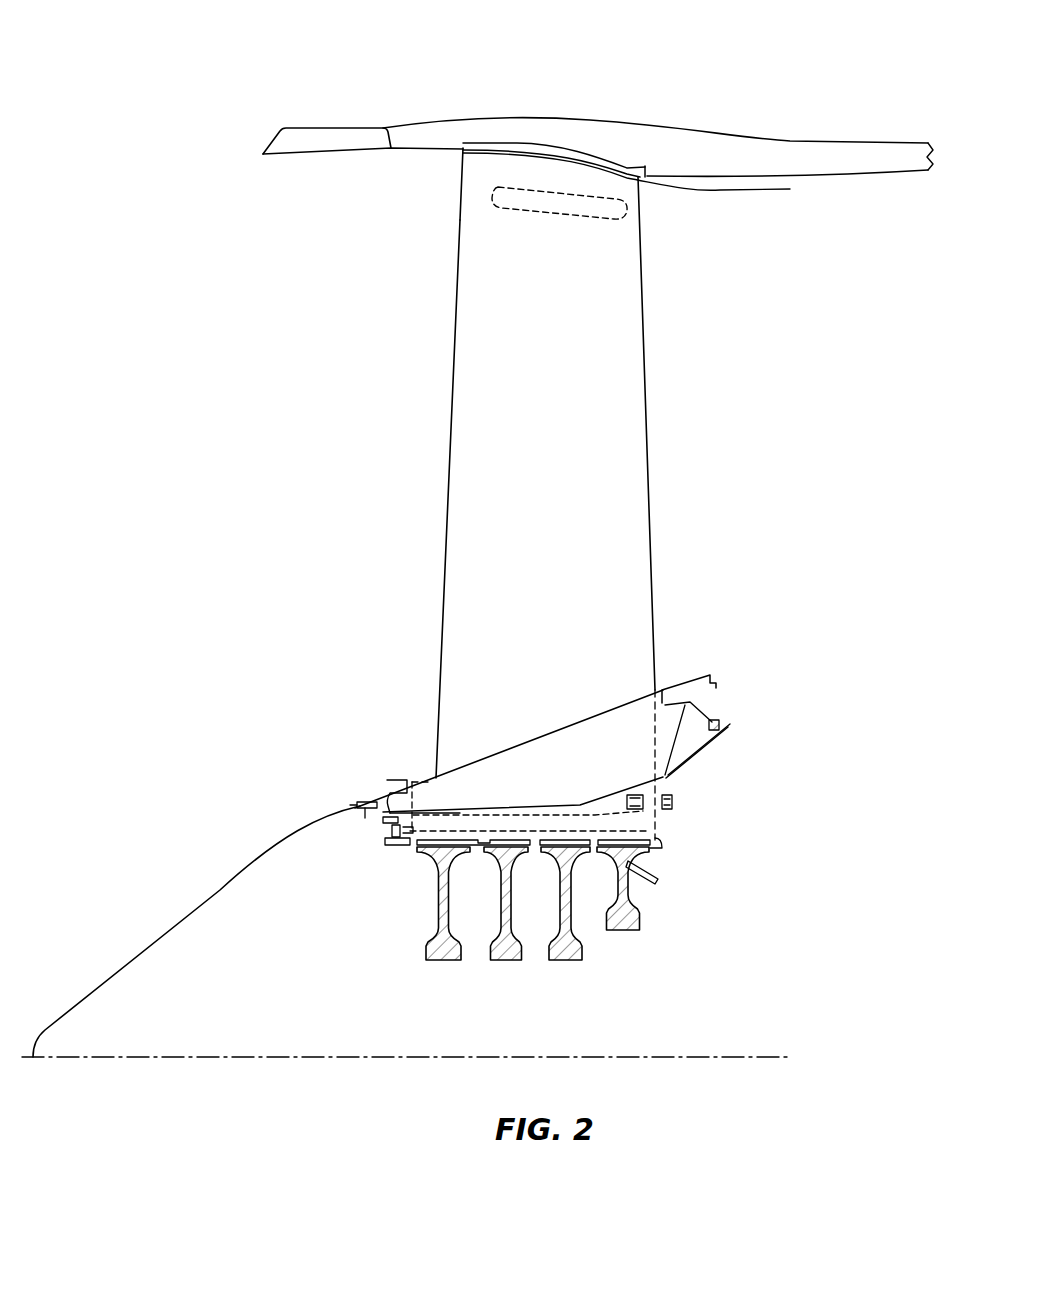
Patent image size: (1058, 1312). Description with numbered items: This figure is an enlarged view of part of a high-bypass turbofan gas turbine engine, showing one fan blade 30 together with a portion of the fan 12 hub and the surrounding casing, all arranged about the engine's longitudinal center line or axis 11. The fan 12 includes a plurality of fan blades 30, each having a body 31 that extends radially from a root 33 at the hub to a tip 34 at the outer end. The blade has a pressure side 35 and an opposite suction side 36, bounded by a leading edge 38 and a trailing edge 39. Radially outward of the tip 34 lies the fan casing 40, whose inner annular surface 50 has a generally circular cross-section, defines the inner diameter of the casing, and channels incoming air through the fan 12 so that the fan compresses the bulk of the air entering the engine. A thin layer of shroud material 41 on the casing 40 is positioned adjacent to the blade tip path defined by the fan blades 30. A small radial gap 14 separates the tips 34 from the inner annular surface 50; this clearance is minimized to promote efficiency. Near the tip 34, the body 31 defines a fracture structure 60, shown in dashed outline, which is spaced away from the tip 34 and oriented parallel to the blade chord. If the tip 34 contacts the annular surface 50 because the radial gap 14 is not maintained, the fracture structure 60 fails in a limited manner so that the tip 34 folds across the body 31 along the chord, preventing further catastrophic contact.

The fan casing 40 is at (511, 91).
The shroud material 41 is at (573, 150).
The inner annular surface 50 is at (646, 170).
The radial gap 14 is at (463, 152).
The tip 34 is at (790, 189).
The fracture structure 60 is at (607, 221).
The leading edge 38 is at (457, 325).
The pressure side 35 is at (557, 494).
The trailing edge 39 is at (644, 443).
The suction side 36 is at (452, 437).
The fan blade 30 is at (324, 487).
The body 31 is at (463, 670).
The root 33 is at (470, 780).
The fan 12 is at (214, 850).
The longitudinal center line or axis 11 is at (285, 1057).